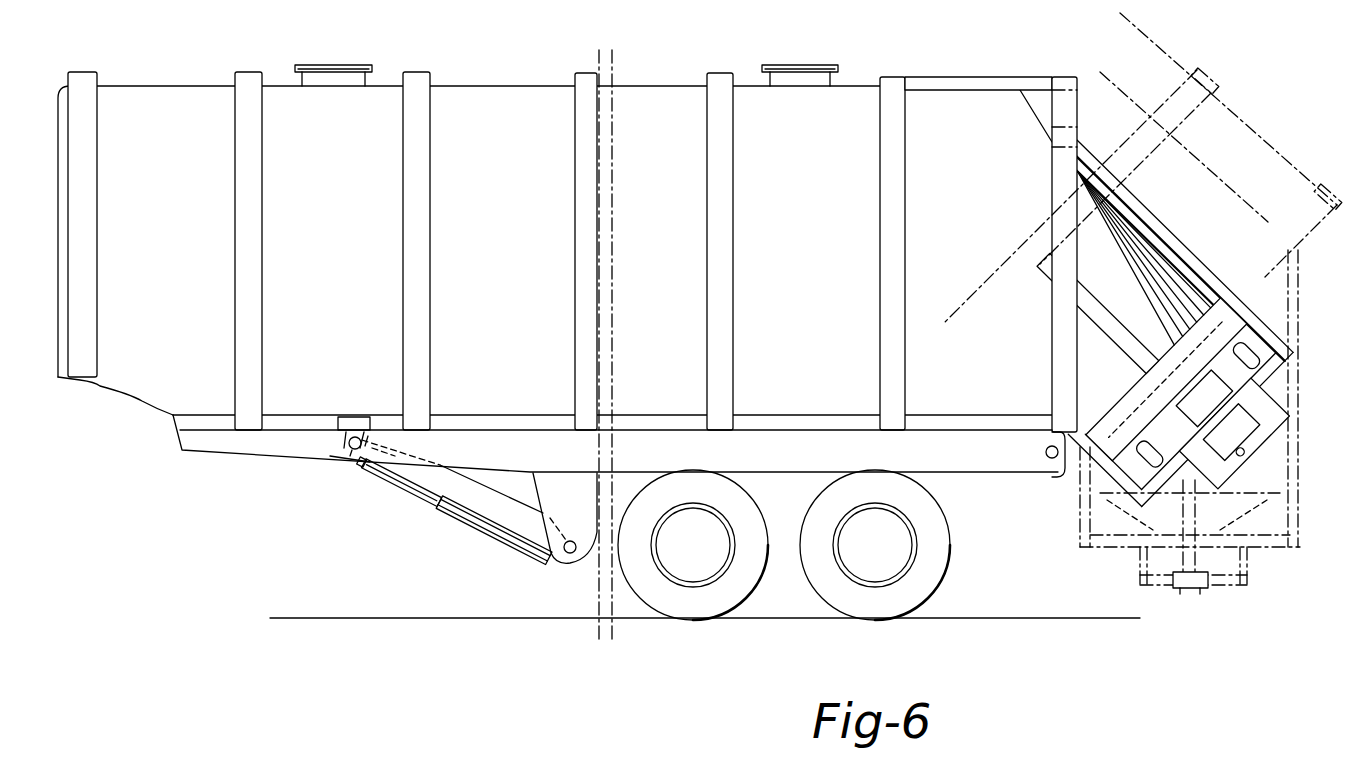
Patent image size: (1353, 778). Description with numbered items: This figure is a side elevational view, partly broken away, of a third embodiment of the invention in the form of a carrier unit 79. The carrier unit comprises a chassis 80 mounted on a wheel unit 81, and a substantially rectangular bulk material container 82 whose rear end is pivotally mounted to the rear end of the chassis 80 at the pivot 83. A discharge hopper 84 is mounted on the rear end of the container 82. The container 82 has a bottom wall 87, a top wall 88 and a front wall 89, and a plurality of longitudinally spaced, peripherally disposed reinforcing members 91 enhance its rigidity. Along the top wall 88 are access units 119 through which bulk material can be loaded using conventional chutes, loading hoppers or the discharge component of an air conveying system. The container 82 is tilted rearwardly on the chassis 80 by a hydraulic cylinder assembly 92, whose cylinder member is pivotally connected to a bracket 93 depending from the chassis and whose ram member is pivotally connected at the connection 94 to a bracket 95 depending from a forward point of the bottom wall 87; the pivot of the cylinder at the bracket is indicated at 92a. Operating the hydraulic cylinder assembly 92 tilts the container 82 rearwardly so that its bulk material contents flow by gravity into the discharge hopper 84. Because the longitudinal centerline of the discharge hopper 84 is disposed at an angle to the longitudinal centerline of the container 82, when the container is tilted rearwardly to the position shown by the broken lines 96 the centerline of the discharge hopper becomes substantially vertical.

The carrier unit 79 is at (660, 84).
The chassis 80 is at (619, 462).
The wheel unit 81 is at (952, 544).
The bulk material container 82 is at (555, 233).
The pivotal mounting 83 is at (1045, 453).
The discharge hopper 84 is at (1134, 253).
The bottom wall 87 is at (795, 422).
The top wall 88 is at (514, 86).
The front wall 89 is at (65, 227).
The reinforcing members 91 is at (262, 205).
The hydraulic cylinder assembly 92 is at (440, 501).
The cylinder pivot pin 92a is at (568, 554).
The bracket 93 is at (589, 511).
The pivotal connection 94 is at (353, 458).
The bracket 95 is at (352, 418).
The broken lines 96 is at (1238, 118).
The access units 119 is at (349, 66).